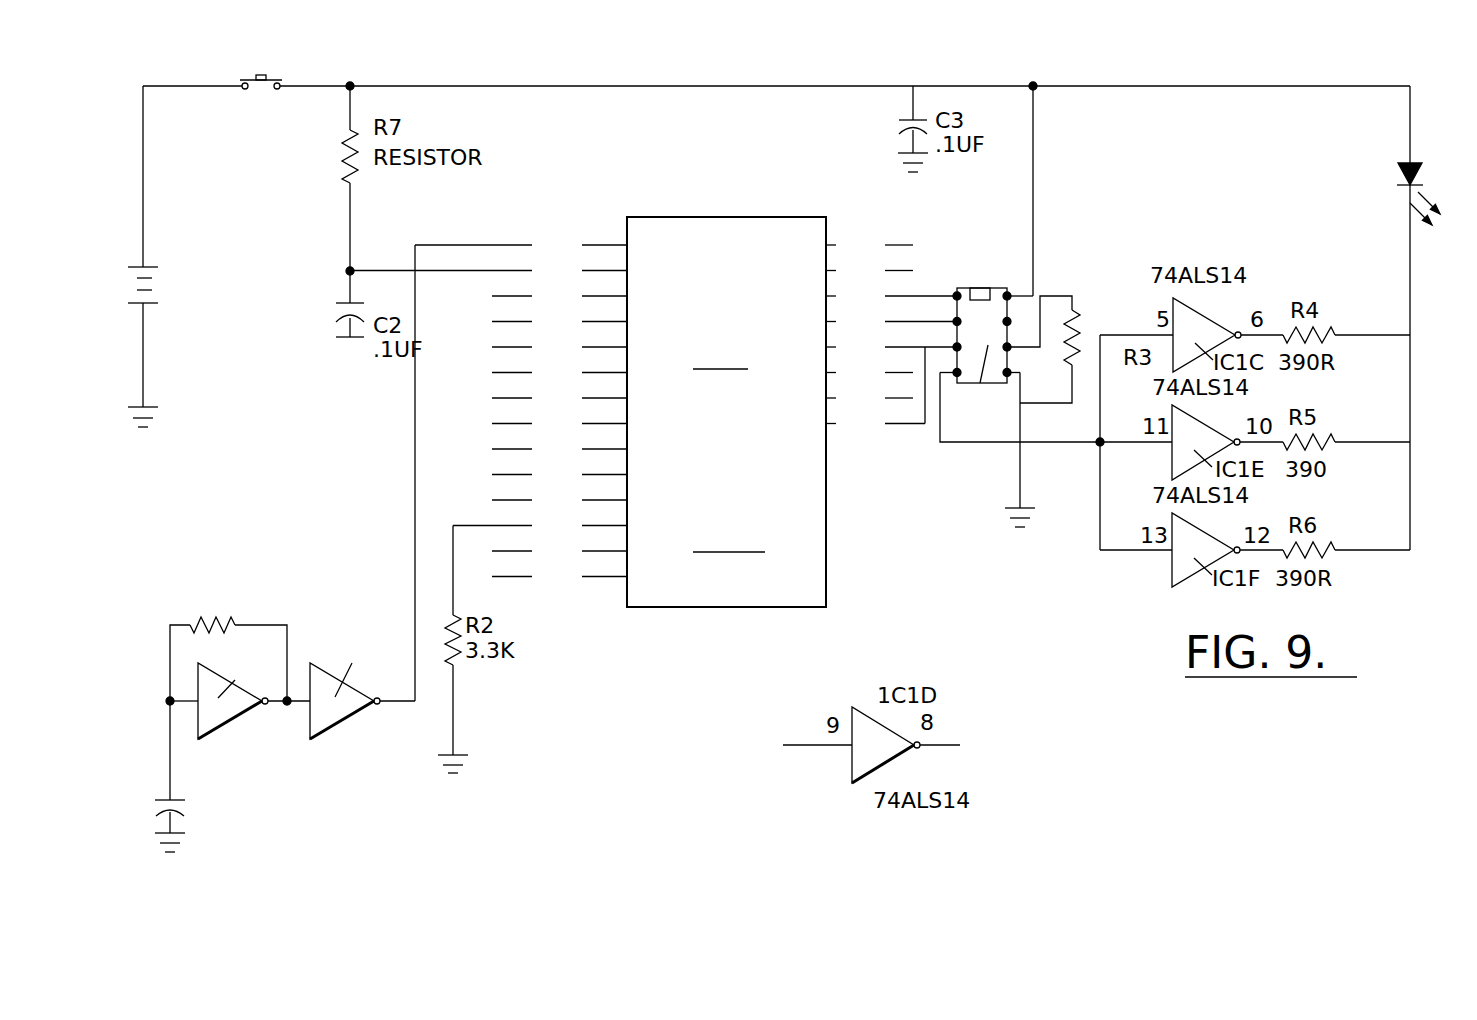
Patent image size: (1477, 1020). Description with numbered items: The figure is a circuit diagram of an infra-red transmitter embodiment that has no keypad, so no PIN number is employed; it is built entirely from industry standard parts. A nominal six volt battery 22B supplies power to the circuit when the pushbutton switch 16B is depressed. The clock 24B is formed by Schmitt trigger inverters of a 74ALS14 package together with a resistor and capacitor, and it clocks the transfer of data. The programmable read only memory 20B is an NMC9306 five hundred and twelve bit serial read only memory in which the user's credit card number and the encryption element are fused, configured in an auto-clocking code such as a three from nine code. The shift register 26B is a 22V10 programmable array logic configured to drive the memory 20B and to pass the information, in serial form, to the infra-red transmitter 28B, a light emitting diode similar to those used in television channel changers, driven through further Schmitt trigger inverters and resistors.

The switch 16B is at (268, 85).
The battery 22B is at (200, 256).
The programmable read only memory chip 20B is at (1047, 358).
The infra-red transmitter 28B is at (1256, 374).
The shift register 26B is at (659, 431).
The clock 24B is at (295, 555).